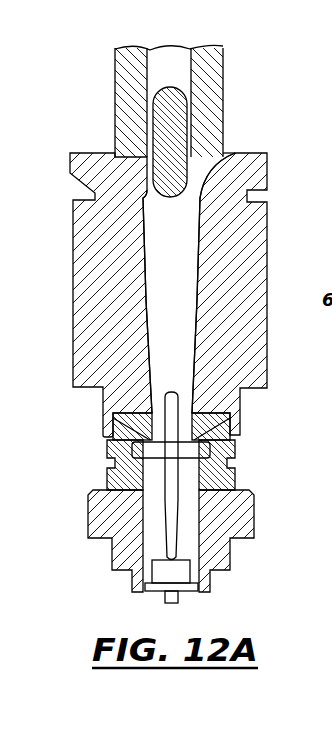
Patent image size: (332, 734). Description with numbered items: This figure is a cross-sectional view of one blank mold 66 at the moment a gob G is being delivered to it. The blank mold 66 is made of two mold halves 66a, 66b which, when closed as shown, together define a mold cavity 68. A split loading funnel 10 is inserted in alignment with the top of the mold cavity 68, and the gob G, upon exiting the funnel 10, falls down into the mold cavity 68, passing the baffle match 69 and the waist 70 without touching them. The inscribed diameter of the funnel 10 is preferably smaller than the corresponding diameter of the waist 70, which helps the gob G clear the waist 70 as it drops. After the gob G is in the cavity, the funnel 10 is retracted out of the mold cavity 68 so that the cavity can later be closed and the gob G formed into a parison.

The funnel 10 is at (90, 74).
The blank mold 66 is at (58, 150).
The mold half 66a is at (75, 288).
The mold half 66b is at (253, 345).
The gob G is at (182, 113).
The baffle match 69 is at (238, 152).
The mold cavity 68 is at (195, 258).
The waist 70 is at (144, 252).